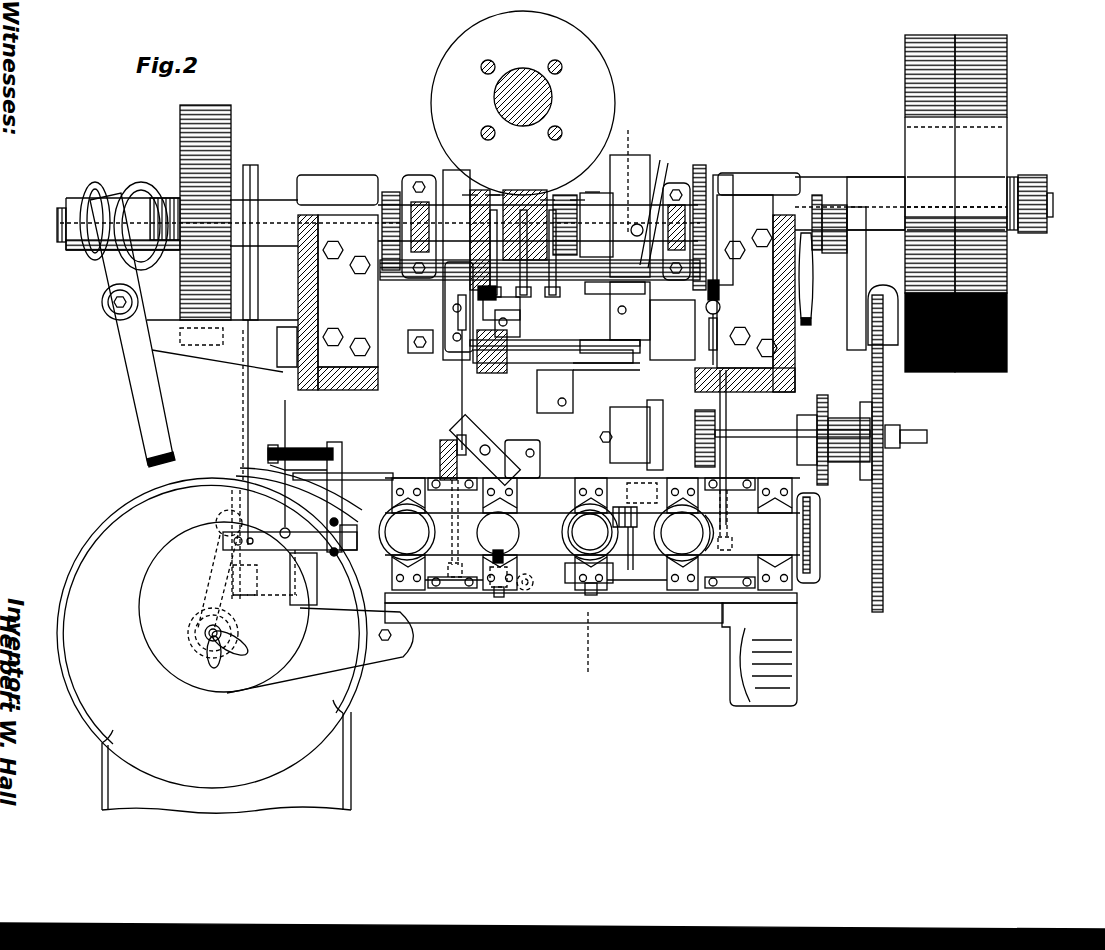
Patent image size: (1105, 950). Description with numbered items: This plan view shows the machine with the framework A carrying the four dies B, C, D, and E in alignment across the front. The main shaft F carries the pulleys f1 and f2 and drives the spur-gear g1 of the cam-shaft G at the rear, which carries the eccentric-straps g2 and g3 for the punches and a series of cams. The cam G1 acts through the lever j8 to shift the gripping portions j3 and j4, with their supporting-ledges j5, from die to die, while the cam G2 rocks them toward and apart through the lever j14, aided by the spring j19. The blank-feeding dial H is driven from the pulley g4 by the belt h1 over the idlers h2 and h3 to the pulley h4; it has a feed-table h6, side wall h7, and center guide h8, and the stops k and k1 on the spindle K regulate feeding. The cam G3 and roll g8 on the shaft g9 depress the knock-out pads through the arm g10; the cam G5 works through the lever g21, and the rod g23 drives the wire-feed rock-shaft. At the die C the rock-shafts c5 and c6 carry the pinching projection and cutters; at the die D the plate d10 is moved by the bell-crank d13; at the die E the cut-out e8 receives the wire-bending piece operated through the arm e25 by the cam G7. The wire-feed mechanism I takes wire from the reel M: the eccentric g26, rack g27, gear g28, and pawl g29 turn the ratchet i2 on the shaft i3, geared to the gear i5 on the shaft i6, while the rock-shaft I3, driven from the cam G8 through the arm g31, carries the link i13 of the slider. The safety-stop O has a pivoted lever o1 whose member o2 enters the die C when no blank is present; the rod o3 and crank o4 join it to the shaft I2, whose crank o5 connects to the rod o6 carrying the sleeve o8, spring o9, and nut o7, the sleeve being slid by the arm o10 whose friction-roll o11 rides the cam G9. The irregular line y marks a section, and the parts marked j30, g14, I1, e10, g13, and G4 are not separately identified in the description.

The cam-shaft G is at (62, 214).
The cam G1 is at (90, 183).
The lever j8 is at (127, 375).
The spur-gear g1 is at (224, 168).
The pulley g4 is at (262, 172).
The belt h1 is at (246, 395).
The spindle K is at (337, 297).
The framework A is at (345, 391).
The stationary side wall h7 is at (96, 532).
The center guide h8 is at (194, 676).
The pulley h4 is at (192, 645).
The idler h2 is at (220, 520).
The idler h3 is at (246, 590).
The stop k is at (300, 498).
The stop k1 is at (336, 500).
The blank-feeding dial H is at (257, 710).
The stationary feed-table h6 is at (343, 770).
The die B is at (408, 556).
The die C is at (495, 556).
The die D is at (598, 560).
The die E is at (686, 560).
The supporting-ledges j5 is at (771, 566).
The gripping portions j3 is at (479, 592).
The gripping portions j4 is at (411, 482).
The pivoted lever o1 is at (508, 585).
The member o2 is at (500, 548).
The rod o3 is at (470, 525).
The bell-crank d13 is at (632, 503).
The movable plate d10 is at (637, 557).
The cut-out e8 is at (692, 535).
The section line y is at (603, 400).
The eccentric-strap g2 is at (414, 176).
The nut o7 is at (452, 184).
The friction-roll o11 is at (456, 265).
The arm o10 is at (464, 240).
The compressible spring o9 is at (470, 258).
The loose sleeve o8 is at (478, 290).
The rod o6 is at (462, 315).
The second crank o5 is at (447, 346).
The crank o4 is at (475, 372).
The safety-stop O is at (491, 378).
The block j30 is at (501, 317).
The link i13 is at (513, 331).
The lever g21 is at (555, 334).
The shaft g9 is at (562, 300).
The rod g23 is at (610, 340).
The arm g10 is at (596, 290).
The plate g14 is at (632, 302).
The wire-feed mechanism I is at (685, 322).
The rock-shaft I3 is at (553, 376).
The shaft I2 is at (551, 406).
The bar I1 is at (595, 395).
The rock-shaft c5 is at (462, 440).
The rock-shaft c6 is at (495, 445).
The shaft i6 is at (636, 424).
The gear i5 is at (702, 440).
The shaft i3 is at (792, 420).
The arm e25 is at (742, 447).
The lever j14 is at (808, 316).
The cam G3 is at (642, 170).
The eccentric-strap g3 is at (697, 166).
The roll g8 is at (672, 182).
The cam G7 is at (719, 176).
The cam G2 is at (822, 200).
The pulley f2 is at (905, 95).
The pulley f1 is at (1007, 85).
The main shaft F is at (1051, 206).
The eccentric g26 is at (880, 345).
The rack g27 is at (884, 490).
The gear g28 is at (928, 437).
The pawl g29 is at (826, 430).
The ratchet i2 is at (830, 470).
The spring e10 is at (812, 520).
The spring j19 is at (813, 540).
The reel of wire M is at (606, 88).
The cam G9 is at (470, 194).
The cam G8 is at (492, 195).
The cam G5 is at (546, 200).
The pin g13 is at (577, 200).
The arm g31 is at (512, 182).
The pin G4 is at (592, 192).